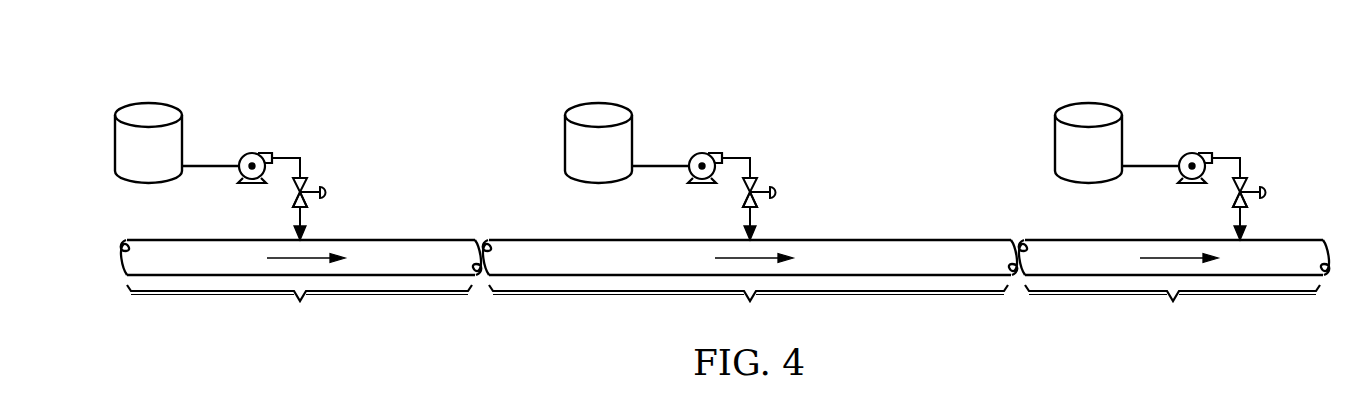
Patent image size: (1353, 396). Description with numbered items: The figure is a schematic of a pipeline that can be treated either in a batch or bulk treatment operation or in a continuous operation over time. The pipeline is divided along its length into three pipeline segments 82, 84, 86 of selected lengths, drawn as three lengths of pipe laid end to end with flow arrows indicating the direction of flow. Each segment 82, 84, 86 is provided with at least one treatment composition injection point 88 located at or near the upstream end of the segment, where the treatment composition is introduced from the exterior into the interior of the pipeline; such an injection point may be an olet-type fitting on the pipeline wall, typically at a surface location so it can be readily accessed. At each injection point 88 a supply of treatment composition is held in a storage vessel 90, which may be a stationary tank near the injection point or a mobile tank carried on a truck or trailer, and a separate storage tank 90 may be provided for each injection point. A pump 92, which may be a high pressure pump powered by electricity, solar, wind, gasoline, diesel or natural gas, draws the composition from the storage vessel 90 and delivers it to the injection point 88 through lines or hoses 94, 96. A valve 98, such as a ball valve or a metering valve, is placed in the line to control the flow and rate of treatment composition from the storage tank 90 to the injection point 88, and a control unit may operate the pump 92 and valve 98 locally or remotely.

The pipeline segment 82 is at (301, 287).
The pipeline segment 84 is at (750, 287).
The pipeline segment 86 is at (1174, 287).
The treatment composition injection point 88 is at (303, 230).
The storage vessel 90 is at (133, 113).
The pump 92 is at (267, 150).
The line or hose 94 is at (223, 165).
The line or hose 96 is at (303, 157).
The valve 98 is at (295, 200).